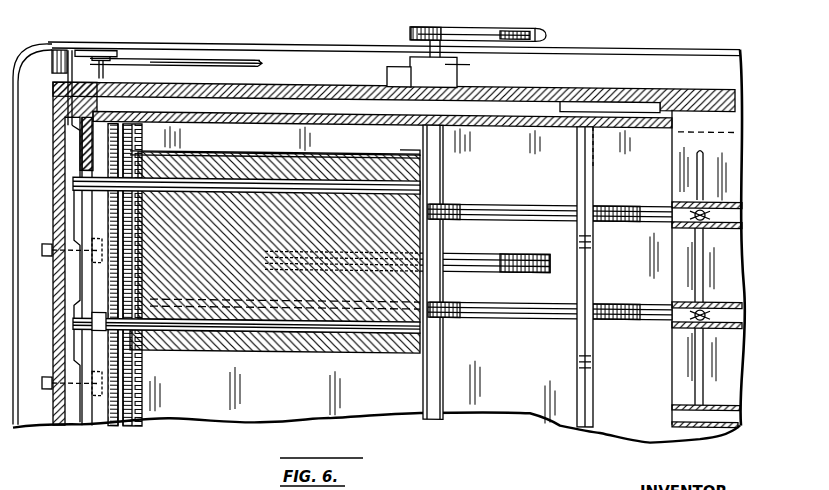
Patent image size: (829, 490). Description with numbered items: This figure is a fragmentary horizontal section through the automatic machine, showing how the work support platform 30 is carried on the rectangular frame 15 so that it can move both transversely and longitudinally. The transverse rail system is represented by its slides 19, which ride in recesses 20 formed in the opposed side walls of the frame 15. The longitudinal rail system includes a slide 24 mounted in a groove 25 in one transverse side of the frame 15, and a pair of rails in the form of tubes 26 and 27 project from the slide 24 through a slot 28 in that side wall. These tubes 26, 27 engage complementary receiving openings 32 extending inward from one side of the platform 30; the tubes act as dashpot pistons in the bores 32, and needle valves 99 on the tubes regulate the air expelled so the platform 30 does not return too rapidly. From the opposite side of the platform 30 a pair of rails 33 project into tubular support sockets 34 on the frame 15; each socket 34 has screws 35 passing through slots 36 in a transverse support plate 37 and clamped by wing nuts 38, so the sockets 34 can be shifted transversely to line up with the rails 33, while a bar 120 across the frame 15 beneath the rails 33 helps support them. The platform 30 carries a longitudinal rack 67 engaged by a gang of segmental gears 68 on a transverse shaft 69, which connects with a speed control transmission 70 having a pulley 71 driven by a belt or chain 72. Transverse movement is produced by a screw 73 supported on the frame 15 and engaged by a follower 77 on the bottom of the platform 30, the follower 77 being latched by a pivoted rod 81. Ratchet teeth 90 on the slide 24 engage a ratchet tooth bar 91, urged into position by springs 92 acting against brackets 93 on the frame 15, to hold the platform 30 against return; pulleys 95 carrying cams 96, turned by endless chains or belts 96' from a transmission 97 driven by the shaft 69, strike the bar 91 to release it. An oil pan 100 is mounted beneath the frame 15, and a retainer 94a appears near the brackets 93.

The rectangular frame 15 is at (697, 93).
The slides 19 is at (310, 118).
The recesses 20 is at (605, 106).
The slide 24 is at (74, 230).
The groove 25 is at (50, 428).
The tube 26 is at (300, 187).
The tube 27 is at (290, 344).
The slot 28 is at (84, 428).
The work support platform 30 is at (445, 183).
The receiving openings 32 is at (420, 146).
The rails 33 is at (546, 215).
The tubular support sockets 34 is at (740, 198).
The screws 35 is at (690, 224).
The slots 36 is at (704, 150).
The transverse support plate 37 is at (676, 176).
The wing nut 38 is at (742, 234).
The rack 67 is at (240, 146).
The segmental gears 68 is at (486, 251).
The shaft 69 is at (445, 381).
The speed control transmission 70 is at (470, 56).
The pulley 71 is at (455, 24).
The driver belt or chain 72 is at (537, 28).
The screw 73 is at (114, 275).
The follower 77 is at (140, 388).
The rod 81 is at (285, 345).
The ratchet teeth 90 is at (72, 272).
The ratchet tooth bar 91 is at (72, 372).
The springs 92 is at (61, 50).
The brackets 93 is at (55, 54).
The T-shaped retainer 94a is at (80, 50).
The pulleys 95 is at (130, 58).
The cams 96 is at (102, 37).
The endless chains or belts 96' is at (206, 40).
The transmission means 97 is at (412, 54).
The needle valves 99 is at (98, 319).
The oil pan 100 is at (624, 41).
The bar 120 is at (598, 389).